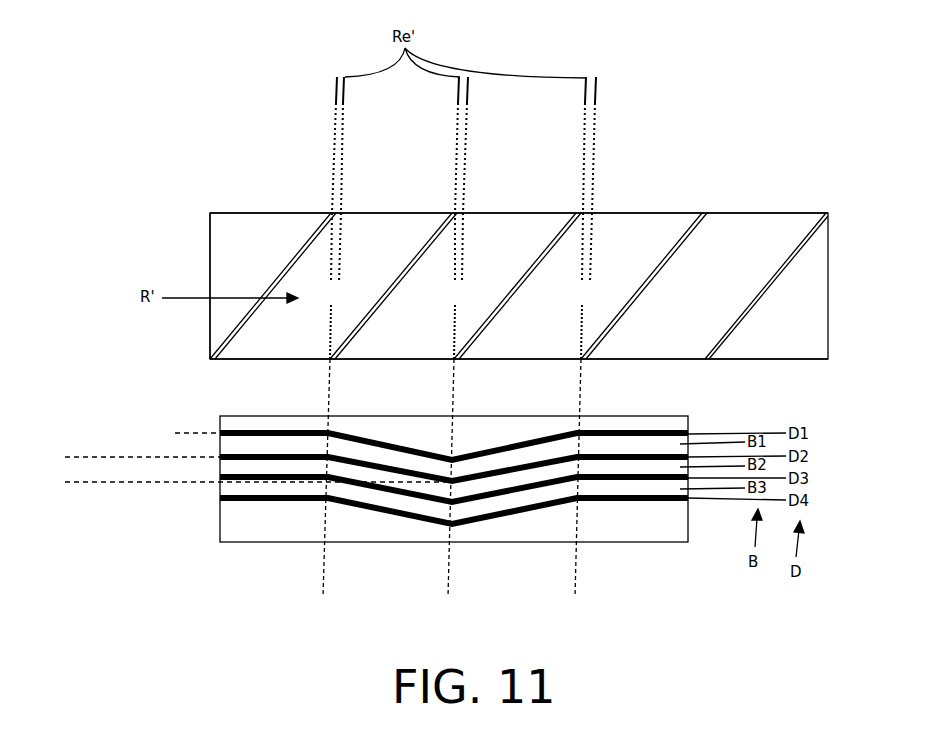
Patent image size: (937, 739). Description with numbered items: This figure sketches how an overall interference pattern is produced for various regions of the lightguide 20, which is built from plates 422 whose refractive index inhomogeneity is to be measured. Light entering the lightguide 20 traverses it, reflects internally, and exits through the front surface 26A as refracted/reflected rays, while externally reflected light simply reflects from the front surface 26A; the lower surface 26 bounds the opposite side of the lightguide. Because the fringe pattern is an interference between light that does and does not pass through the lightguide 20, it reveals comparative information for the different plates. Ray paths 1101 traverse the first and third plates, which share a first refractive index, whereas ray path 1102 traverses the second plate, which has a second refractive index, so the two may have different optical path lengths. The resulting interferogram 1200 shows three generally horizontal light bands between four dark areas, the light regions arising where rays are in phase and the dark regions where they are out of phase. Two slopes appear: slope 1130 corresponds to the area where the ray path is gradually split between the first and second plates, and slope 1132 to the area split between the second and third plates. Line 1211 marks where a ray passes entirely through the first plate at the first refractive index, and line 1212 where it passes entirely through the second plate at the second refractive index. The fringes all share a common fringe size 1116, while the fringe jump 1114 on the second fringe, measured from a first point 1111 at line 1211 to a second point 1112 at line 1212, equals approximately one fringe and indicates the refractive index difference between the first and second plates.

The lightguide (LOE) 20 is at (519, 286).
The front surface 26A is at (230, 213).
The bottom major surface of LOE 26 is at (240, 359).
The plates 422 is at (190, 244).
The ray paths 1101 is at (457, 218).
The ray path 1102 is at (454, 218).
The first point 1111 is at (98, 405).
The second point 1112 is at (98, 532).
The fringe jump 1114 is at (97, 470).
The fringe size 1116 is at (176, 385).
The interferogram 1200 is at (243, 562).
The slope 1130 is at (377, 558).
The slope 1132 is at (508, 558).
The line 1211 is at (323, 597).
The line 1212 is at (448, 597).